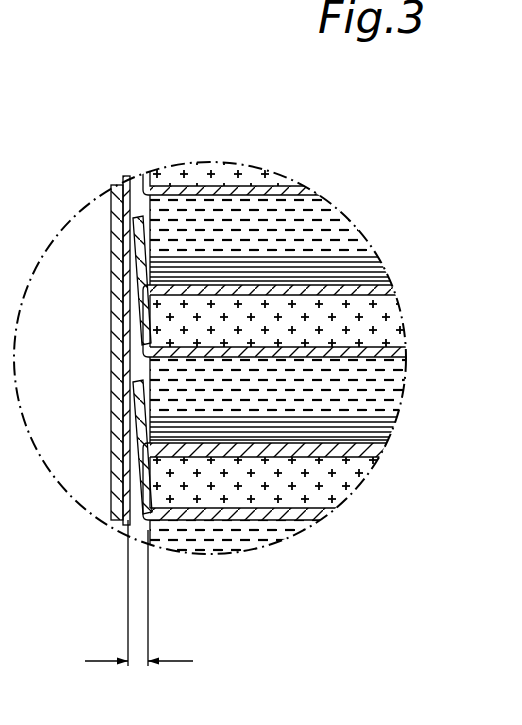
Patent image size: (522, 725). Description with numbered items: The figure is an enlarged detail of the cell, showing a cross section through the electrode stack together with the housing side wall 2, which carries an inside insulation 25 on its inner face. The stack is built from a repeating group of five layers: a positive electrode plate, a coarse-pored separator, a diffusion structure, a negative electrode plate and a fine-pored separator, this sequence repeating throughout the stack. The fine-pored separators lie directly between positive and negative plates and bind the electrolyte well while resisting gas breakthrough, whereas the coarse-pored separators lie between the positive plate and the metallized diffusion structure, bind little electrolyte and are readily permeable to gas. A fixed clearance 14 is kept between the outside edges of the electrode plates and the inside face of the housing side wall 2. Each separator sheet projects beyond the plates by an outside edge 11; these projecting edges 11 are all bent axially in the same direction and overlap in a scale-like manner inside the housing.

The housing side wall 2 is at (113, 505).
The inside insulation 25 is at (127, 522).
The projecting edge 11 is at (140, 458).
The clearance 14 is at (137, 663).